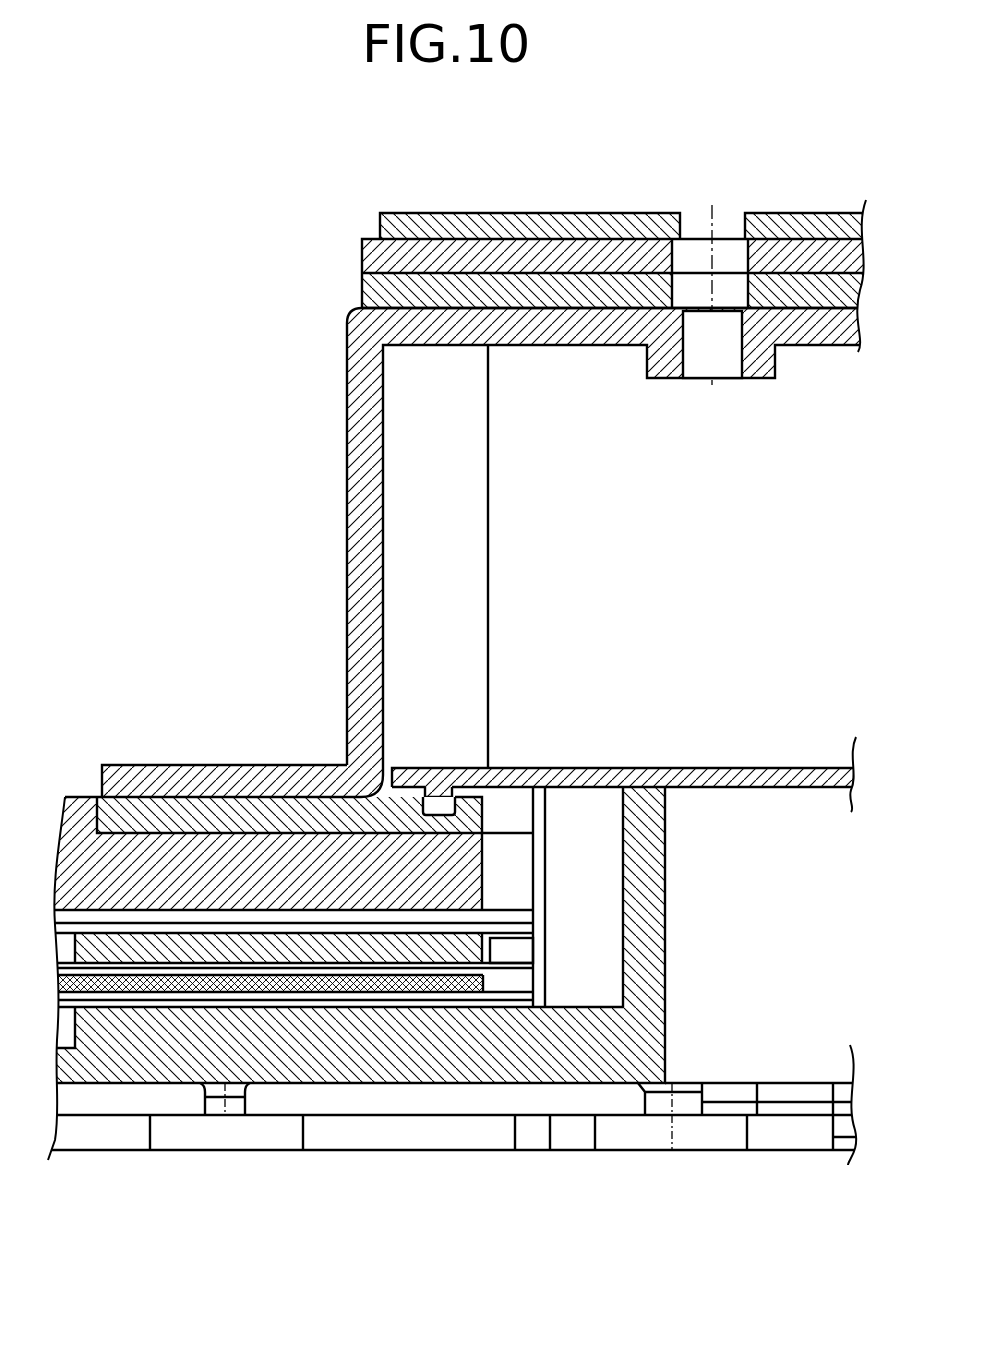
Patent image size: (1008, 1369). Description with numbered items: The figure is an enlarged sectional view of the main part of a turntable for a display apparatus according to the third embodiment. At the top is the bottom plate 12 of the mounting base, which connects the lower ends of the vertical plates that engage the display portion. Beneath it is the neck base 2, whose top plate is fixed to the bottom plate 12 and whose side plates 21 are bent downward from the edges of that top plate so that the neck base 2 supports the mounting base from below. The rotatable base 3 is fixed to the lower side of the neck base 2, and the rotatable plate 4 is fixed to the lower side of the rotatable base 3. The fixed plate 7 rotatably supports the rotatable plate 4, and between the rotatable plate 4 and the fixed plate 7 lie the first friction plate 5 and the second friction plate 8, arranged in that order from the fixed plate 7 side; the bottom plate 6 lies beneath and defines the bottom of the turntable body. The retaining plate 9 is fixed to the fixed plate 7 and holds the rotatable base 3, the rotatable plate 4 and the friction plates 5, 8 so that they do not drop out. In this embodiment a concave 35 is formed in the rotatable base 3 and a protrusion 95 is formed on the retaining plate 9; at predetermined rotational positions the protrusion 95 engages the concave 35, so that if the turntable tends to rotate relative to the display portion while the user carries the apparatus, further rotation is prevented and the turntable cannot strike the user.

The neck base 2 is at (337, 415).
The side plate 21 is at (365, 533).
The rotatable base 3 is at (193, 817).
The rotatable plate 4 is at (163, 865).
The concave 35 is at (425, 812).
The first friction plate 5 is at (404, 985).
The bottom plate 6 is at (572, 1150).
The fixed plate 7 is at (287, 1052).
The second friction plate 8 is at (490, 952).
The retaining plate 9 is at (752, 785).
The protrusion 95 is at (447, 768).
The bottom plate 12 is at (620, 253).